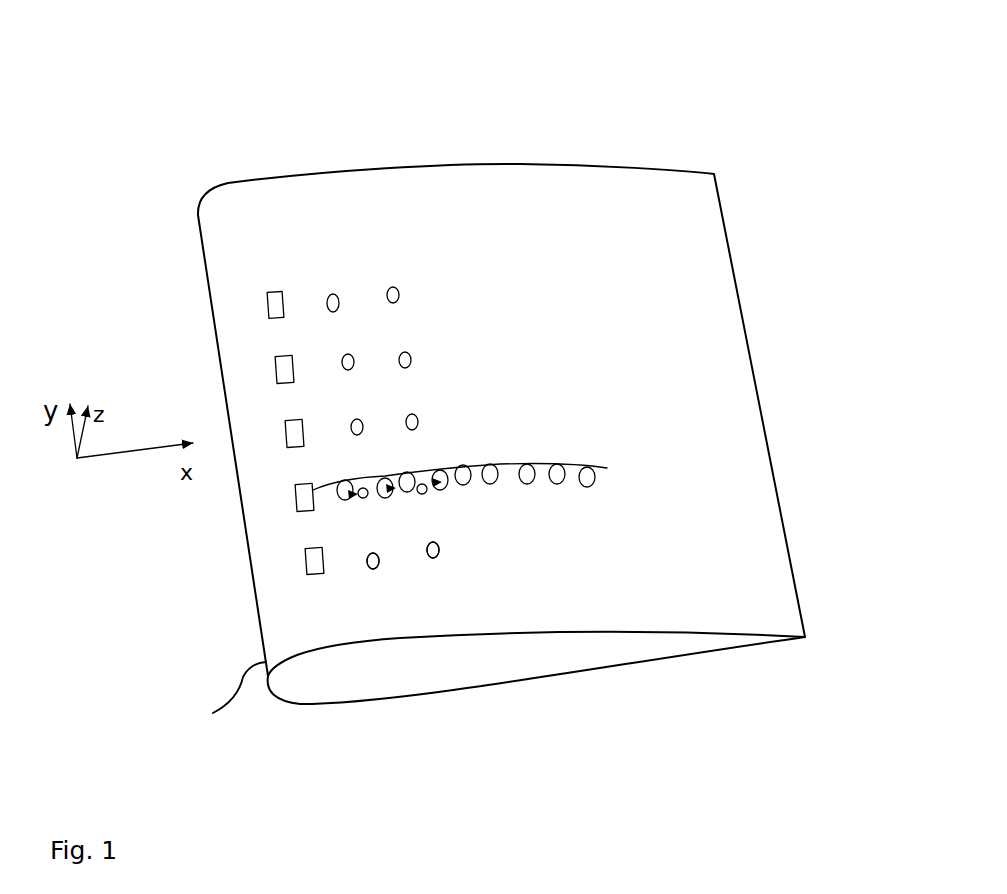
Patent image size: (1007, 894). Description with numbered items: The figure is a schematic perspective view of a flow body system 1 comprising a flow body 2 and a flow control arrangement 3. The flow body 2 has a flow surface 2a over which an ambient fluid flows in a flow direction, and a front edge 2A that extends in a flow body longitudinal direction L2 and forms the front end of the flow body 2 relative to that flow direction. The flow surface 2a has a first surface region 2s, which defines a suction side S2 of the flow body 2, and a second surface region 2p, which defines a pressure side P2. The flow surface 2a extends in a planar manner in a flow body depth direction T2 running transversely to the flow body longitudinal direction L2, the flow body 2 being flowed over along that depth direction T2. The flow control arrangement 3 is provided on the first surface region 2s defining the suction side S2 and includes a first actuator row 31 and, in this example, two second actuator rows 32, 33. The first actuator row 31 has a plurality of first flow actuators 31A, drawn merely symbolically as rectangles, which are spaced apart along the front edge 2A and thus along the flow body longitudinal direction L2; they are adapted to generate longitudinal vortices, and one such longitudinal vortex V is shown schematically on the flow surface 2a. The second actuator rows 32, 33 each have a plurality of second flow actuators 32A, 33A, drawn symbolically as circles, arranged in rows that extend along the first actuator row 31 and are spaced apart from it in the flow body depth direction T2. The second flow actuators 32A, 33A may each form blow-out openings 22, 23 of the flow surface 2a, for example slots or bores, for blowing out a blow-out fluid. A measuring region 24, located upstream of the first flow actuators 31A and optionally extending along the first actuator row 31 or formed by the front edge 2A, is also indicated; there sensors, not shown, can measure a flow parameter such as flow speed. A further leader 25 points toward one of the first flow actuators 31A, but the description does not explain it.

The flow body system 1 is at (720, 57).
The flow body 2 is at (660, 653).
The first surface region 2s is at (585, 190).
The second surface region 2p is at (515, 686).
The flow surface 2a is at (606, 447).
The front edge 2A is at (204, 711).
The flow control arrangement 3 is at (446, 238).
The blow-out opening 22 is at (375, 560).
The blow-out opening 23 is at (430, 553).
The measuring region 24 is at (268, 563).
The connection line 25 is at (262, 300).
The first actuator row 31 is at (266, 282).
The first flow actuator 31A is at (272, 380).
The second actuator row 32 is at (331, 278).
The second flow actuator 32A is at (360, 362).
The second actuator row 33 is at (389, 278).
The second flow actuator 33A is at (406, 294).
The flow body longitudinal direction L2 is at (177, 228).
The suction side S2 is at (688, 528).
The pressure side P2 is at (655, 751).
The flow body depth direction T2 is at (393, 742).
The longitudinal vortex V is at (566, 500).